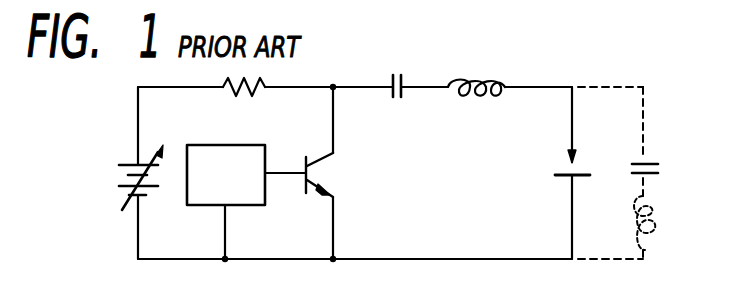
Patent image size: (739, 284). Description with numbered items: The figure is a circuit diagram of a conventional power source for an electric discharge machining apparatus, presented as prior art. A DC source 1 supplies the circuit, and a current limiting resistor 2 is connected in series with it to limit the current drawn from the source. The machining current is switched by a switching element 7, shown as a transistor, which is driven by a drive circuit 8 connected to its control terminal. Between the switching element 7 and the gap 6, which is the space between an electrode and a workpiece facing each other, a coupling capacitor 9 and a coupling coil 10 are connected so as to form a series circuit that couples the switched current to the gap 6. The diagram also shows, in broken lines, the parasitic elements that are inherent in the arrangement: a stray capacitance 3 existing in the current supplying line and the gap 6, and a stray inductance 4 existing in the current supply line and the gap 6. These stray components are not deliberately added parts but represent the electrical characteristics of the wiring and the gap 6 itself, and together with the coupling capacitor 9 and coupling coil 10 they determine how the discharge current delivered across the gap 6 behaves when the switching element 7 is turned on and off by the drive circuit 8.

The DC source 1 is at (123, 164).
The current limiting resistor 2 is at (242, 97).
The stray capacitance 3 is at (657, 166).
The stray inductance 4 is at (652, 218).
The gap 6 is at (582, 174).
The switching element 7 is at (326, 178).
The drive circuit 8 is at (246, 206).
The coupling capacitor 9 is at (397, 99).
The coupling coil 10 is at (488, 99).